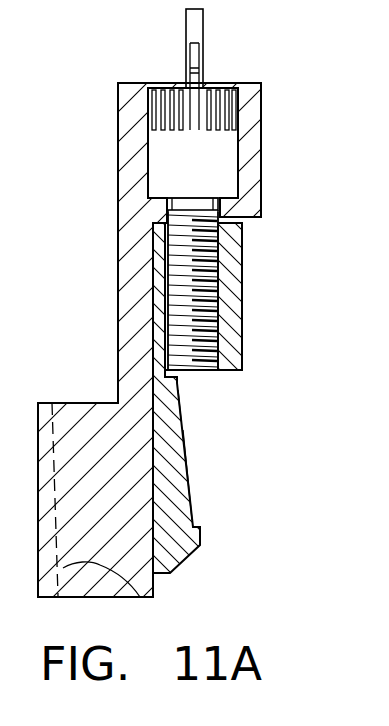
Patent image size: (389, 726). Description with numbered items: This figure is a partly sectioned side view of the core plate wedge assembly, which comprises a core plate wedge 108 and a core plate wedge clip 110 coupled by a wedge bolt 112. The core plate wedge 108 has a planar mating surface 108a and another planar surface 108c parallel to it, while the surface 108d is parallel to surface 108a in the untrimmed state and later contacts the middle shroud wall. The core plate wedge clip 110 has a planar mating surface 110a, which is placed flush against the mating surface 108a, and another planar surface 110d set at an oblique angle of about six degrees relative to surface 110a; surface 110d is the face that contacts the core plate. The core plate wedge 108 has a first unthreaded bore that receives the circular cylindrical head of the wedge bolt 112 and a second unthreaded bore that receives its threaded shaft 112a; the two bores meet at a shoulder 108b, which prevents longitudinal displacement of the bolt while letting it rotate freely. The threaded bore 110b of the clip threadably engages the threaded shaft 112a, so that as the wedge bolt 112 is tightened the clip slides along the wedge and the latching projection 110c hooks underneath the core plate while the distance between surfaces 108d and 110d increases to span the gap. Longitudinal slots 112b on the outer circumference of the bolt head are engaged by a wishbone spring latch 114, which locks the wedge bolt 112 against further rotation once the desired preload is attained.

The core plate wedge 108 is at (108, 340).
The planar mating surface 108a is at (183, 414).
The shoulder 108b is at (150, 196).
The planar surface 108c is at (36, 563).
The surface 108d is at (140, 597).
The core plate wedge clip 110 is at (190, 440).
The planar mating surface 110a is at (151, 442).
The threaded bore 110b is at (200, 270).
The latching projection 110c is at (201, 536).
The planar surface 110d is at (196, 490).
The wedge bolt 112 is at (250, 161).
The threaded shaft 112a is at (167, 239).
The longitudinal slots 112b is at (210, 114).
The wishbone spring latch 114 is at (184, 24).